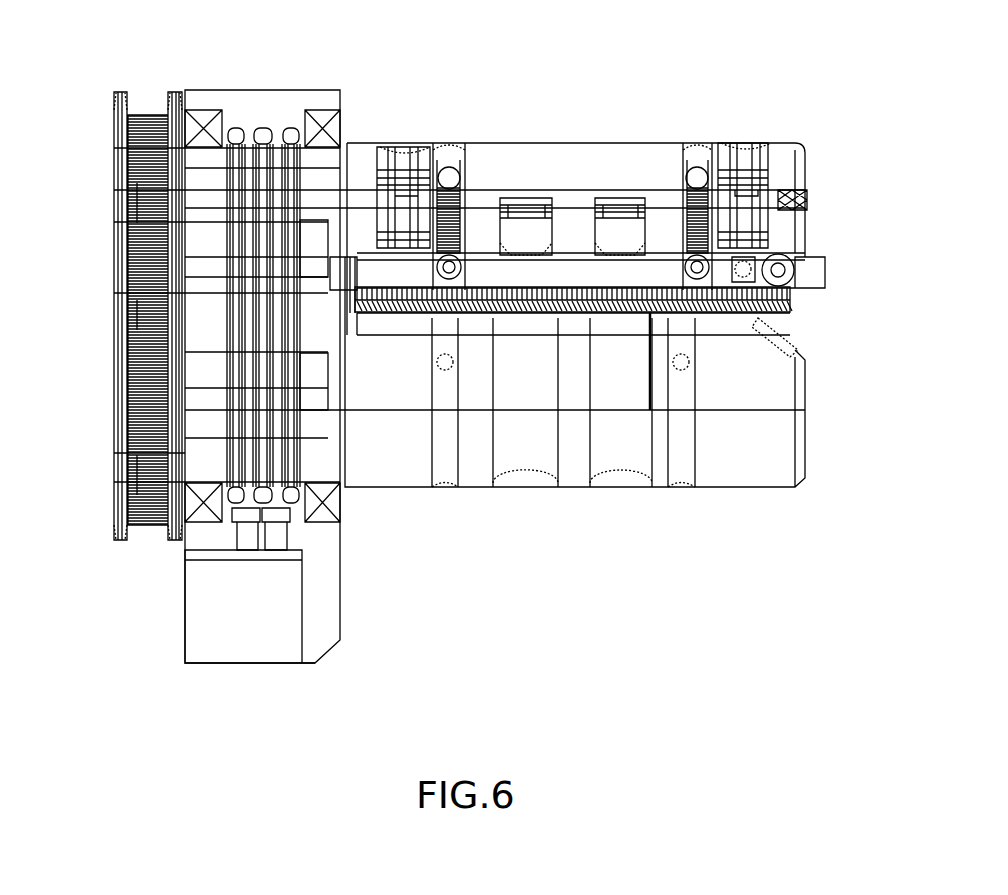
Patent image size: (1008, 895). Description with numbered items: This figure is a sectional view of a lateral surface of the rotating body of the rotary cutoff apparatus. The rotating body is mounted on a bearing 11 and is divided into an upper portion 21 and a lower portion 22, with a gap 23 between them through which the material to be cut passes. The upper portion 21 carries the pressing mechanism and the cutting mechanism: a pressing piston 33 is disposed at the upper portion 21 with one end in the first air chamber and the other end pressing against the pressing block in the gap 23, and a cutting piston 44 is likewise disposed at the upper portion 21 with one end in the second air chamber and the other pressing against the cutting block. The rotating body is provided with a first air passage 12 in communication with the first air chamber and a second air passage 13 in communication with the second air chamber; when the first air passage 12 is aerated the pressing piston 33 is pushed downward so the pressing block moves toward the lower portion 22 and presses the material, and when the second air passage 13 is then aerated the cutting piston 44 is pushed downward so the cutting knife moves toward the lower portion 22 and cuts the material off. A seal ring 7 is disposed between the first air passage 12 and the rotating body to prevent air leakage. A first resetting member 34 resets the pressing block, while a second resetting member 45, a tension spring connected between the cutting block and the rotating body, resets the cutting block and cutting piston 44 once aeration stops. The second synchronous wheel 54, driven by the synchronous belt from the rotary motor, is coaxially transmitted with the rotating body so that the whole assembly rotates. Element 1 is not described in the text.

The base 1 is at (335, 600).
The seal ring 7 is at (258, 128).
The bearing 11 is at (207, 128).
The first air passage 12 is at (272, 540).
The second air passage 13 is at (242, 538).
The upper portion 21 is at (793, 236).
The lower portion 22 is at (756, 433).
The gap 23 is at (770, 313).
The pressing piston 33 is at (530, 215).
The first resetting member 34 is at (448, 143).
The cutting piston 44 is at (630, 222).
The second resetting member 45 is at (700, 150).
The second synchronous wheel 54 is at (128, 150).